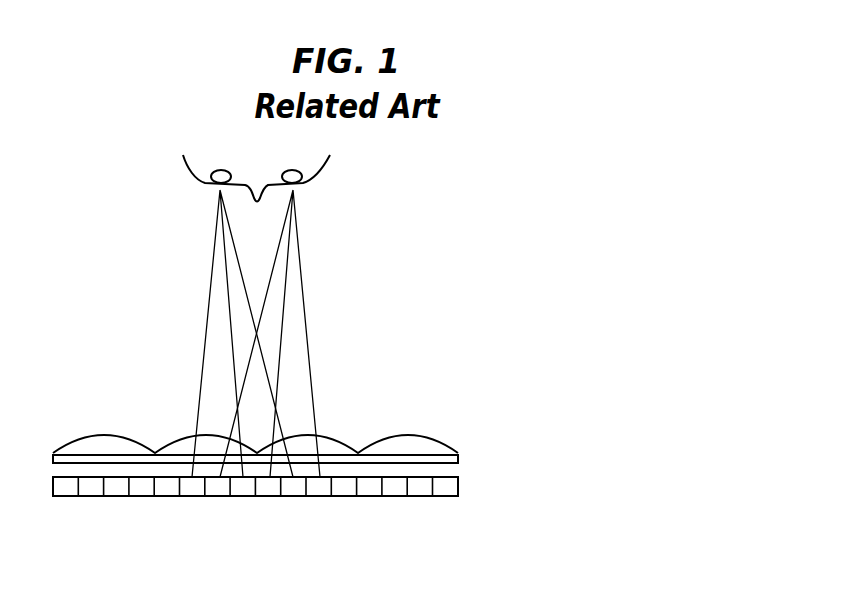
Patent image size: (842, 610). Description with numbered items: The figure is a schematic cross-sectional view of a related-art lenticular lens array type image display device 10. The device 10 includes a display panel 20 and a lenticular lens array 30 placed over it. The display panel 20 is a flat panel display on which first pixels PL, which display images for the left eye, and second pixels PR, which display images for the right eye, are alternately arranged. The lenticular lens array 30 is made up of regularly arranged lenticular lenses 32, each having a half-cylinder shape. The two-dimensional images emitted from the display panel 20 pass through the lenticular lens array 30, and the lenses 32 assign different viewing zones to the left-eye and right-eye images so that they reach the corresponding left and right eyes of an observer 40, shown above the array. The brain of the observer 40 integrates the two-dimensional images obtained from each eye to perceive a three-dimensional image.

The lenticular lens array type image display device 10 is at (358, 435).
The display panel 20 is at (475, 490).
The lenticular lens array 30 is at (334, 395).
The lenticular lens 32 is at (415, 437).
The observer 40 is at (337, 178).